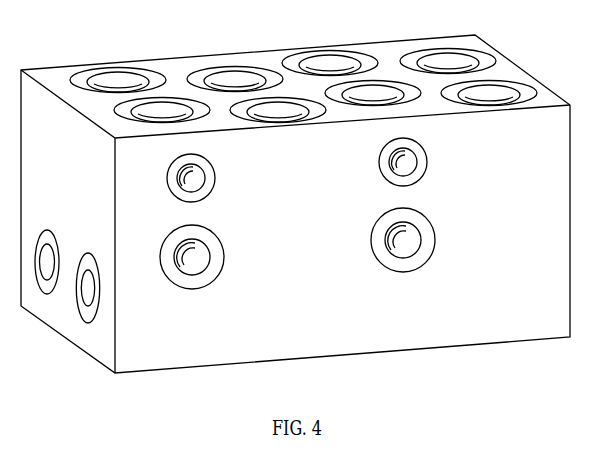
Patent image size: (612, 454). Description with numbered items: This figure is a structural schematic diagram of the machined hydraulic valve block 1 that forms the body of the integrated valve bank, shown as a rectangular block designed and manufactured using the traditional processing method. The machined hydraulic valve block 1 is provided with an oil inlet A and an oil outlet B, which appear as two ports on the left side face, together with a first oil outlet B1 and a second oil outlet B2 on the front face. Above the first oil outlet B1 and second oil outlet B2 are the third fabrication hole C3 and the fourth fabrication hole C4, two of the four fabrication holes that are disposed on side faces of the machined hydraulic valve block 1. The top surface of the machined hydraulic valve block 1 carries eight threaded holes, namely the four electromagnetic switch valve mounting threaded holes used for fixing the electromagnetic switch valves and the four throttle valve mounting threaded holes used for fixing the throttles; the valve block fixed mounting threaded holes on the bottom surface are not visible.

The machined hydraulic valve block 1 is at (515, 72).
The third fabrication hole C3 is at (205, 178).
The fourth fabrication hole C4 is at (417, 162).
The first oil outlet B1 is at (192, 282).
The second oil outlet B2 is at (403, 265).
The oil inlet A is at (87, 274).
The oil outlet B is at (47, 241).